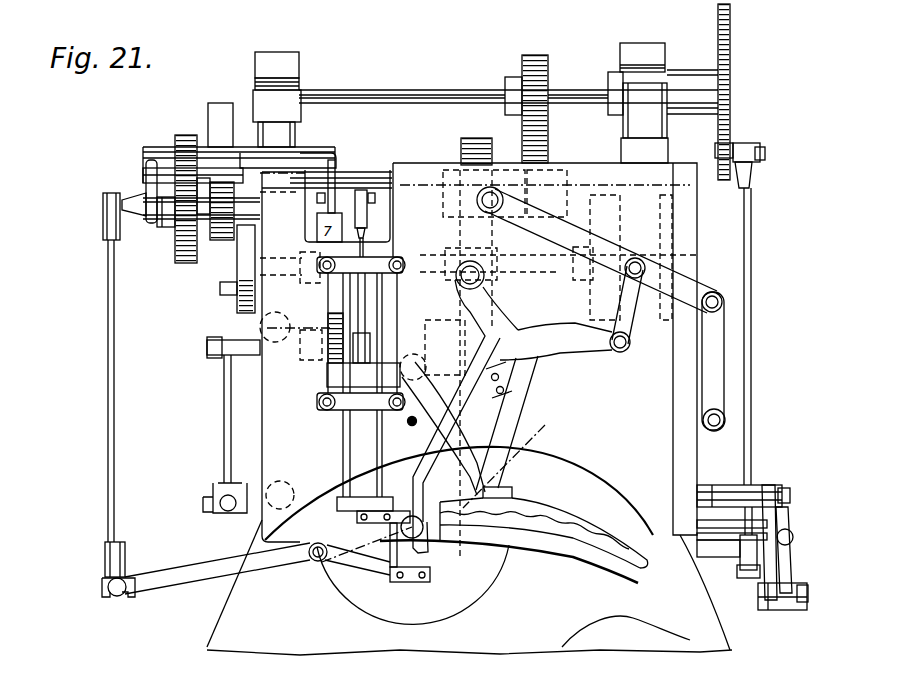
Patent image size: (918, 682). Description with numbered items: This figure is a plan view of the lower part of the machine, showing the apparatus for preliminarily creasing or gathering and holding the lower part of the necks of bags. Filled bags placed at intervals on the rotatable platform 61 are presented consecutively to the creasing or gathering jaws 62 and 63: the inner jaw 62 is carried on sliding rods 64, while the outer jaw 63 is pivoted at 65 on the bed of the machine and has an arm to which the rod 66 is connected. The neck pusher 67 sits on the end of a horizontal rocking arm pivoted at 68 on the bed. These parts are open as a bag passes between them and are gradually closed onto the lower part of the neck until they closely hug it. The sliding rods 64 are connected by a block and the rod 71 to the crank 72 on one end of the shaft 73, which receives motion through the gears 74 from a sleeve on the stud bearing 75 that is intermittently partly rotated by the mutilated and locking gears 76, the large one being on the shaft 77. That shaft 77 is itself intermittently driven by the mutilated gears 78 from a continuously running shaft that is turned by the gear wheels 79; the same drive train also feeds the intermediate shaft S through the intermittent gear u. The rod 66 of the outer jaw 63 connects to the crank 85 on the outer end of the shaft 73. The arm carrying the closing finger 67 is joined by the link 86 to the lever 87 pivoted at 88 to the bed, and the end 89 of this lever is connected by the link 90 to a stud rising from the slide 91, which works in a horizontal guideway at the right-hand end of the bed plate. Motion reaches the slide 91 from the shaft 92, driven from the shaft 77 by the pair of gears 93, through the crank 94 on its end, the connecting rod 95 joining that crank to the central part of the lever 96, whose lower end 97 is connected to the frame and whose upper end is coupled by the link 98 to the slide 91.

The platform 61 is at (469, 551).
The inner creasing jaw 62 is at (530, 507).
The outer creasing jaw 63 is at (541, 548).
The sliding rods 64 is at (340, 462).
The pivot 65 is at (314, 561).
The rod 66 is at (113, 437).
The neck pusher 67 is at (440, 548).
The pivot 68 is at (482, 282).
The rod 71 is at (367, 214).
The crank 72 is at (334, 208).
The shaft 73 is at (337, 165).
The gears 74 is at (185, 222).
The stud bearing 75 is at (162, 218).
The mutilated and locking gears 76 is at (216, 108).
The shaft 77 is at (368, 177).
The mutilated gears 78 is at (475, 138).
The gear wheels 79 is at (616, 214).
The crank 85 is at (150, 190).
The link 86 is at (627, 306).
The lever 87 is at (686, 283).
The pivot 88 is at (483, 205).
The lever end 89 is at (723, 302).
The link 90 is at (712, 357).
The slide 91 is at (703, 431).
The shaft 92 is at (412, 92).
The gears 93 is at (549, 118).
The crank 94 is at (731, 122).
The connecting rod 95 is at (752, 252).
The lever 96 is at (765, 607).
The lever lower end 97 is at (782, 528).
The link 98 is at (795, 608).
The intermediate shaft S is at (277, 340).
The intermittent gear u is at (333, 343).